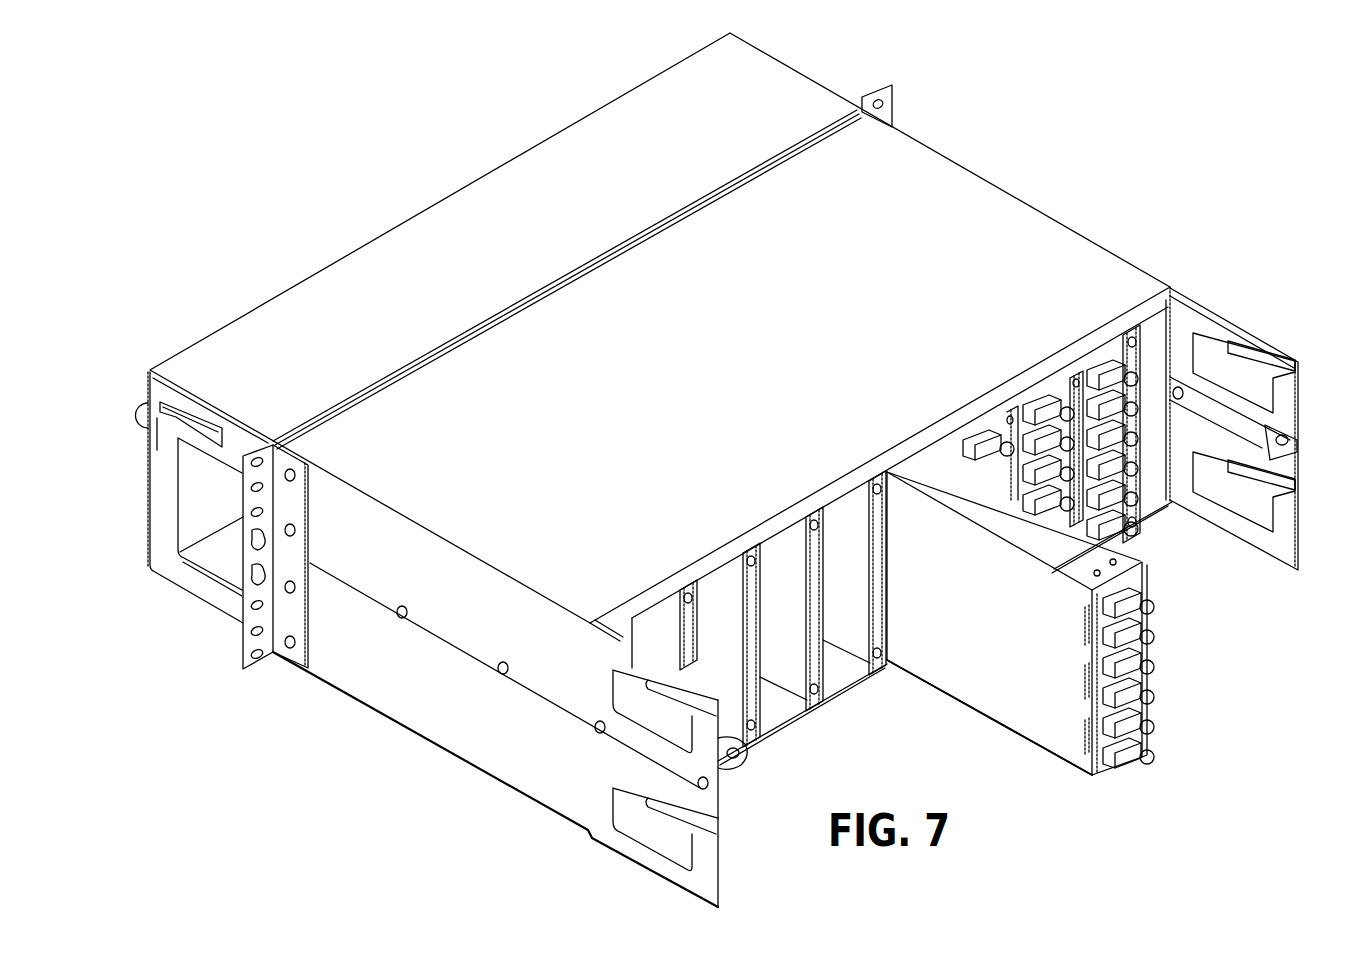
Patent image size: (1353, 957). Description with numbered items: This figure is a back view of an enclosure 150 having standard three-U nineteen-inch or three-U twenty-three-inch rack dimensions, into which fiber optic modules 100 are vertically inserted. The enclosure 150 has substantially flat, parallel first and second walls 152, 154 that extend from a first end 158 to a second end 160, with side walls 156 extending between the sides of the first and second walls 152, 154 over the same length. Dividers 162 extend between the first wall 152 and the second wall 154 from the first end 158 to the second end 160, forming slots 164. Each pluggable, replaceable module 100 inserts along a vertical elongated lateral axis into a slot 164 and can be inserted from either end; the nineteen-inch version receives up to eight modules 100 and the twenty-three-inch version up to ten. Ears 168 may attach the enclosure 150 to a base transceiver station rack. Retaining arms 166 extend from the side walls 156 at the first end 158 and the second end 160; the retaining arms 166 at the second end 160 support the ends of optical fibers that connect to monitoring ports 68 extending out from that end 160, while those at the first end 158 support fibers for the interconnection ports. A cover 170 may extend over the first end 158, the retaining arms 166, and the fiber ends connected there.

The monitoring ports 68 is at (1155, 750).
The module 100 is at (1103, 353).
The enclosure 150 is at (1113, 270).
The first wall 152 is at (907, 157).
The second wall 154 is at (787, 727).
The side walls 156 is at (460, 735).
The first end 158 is at (857, 108).
The second end 160 is at (1158, 497).
The dividers 162 is at (787, 522).
The slots 164 is at (845, 670).
The retaining arms 166 is at (210, 600).
The ears 168 is at (262, 668).
The cover 170 is at (407, 233).